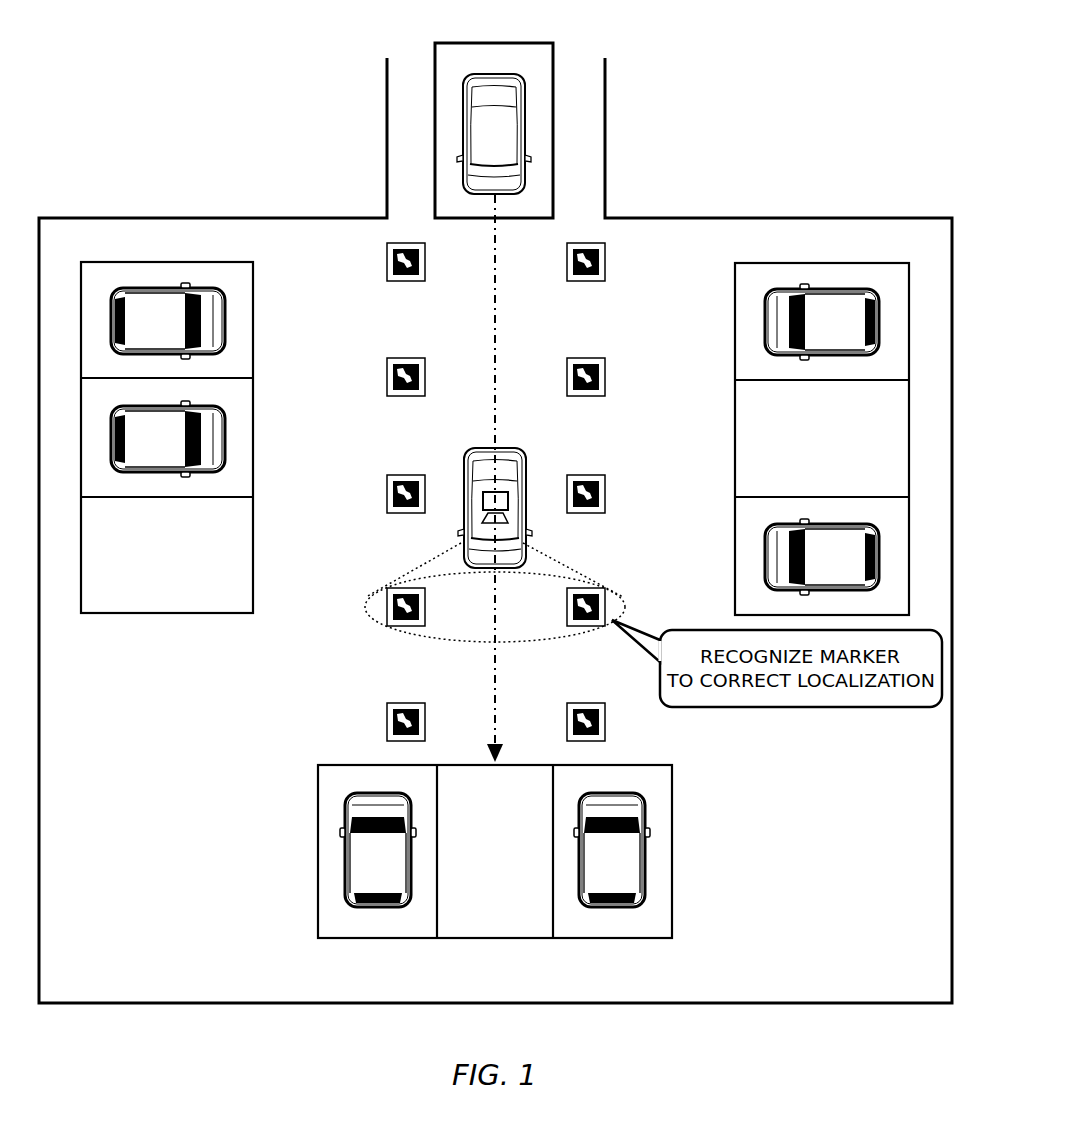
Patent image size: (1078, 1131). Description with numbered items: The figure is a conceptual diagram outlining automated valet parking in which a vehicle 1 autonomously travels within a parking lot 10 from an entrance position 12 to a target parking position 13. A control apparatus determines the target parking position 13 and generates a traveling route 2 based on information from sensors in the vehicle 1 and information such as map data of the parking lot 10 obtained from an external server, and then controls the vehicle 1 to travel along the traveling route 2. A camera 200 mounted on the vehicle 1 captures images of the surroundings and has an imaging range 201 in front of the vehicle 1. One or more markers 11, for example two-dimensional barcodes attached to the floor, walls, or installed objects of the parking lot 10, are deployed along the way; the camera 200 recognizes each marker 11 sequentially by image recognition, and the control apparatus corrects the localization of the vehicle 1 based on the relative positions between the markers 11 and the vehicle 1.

The parking lot 10 is at (840, 87).
The entrance position 12 is at (453, 44).
The vehicle 1 is at (465, 86).
The traveling route 2 is at (497, 320).
The marker 11 is at (388, 258).
The camera 200 is at (512, 506).
The imaging range 201 is at (577, 568).
The target parking position 13 is at (464, 940).